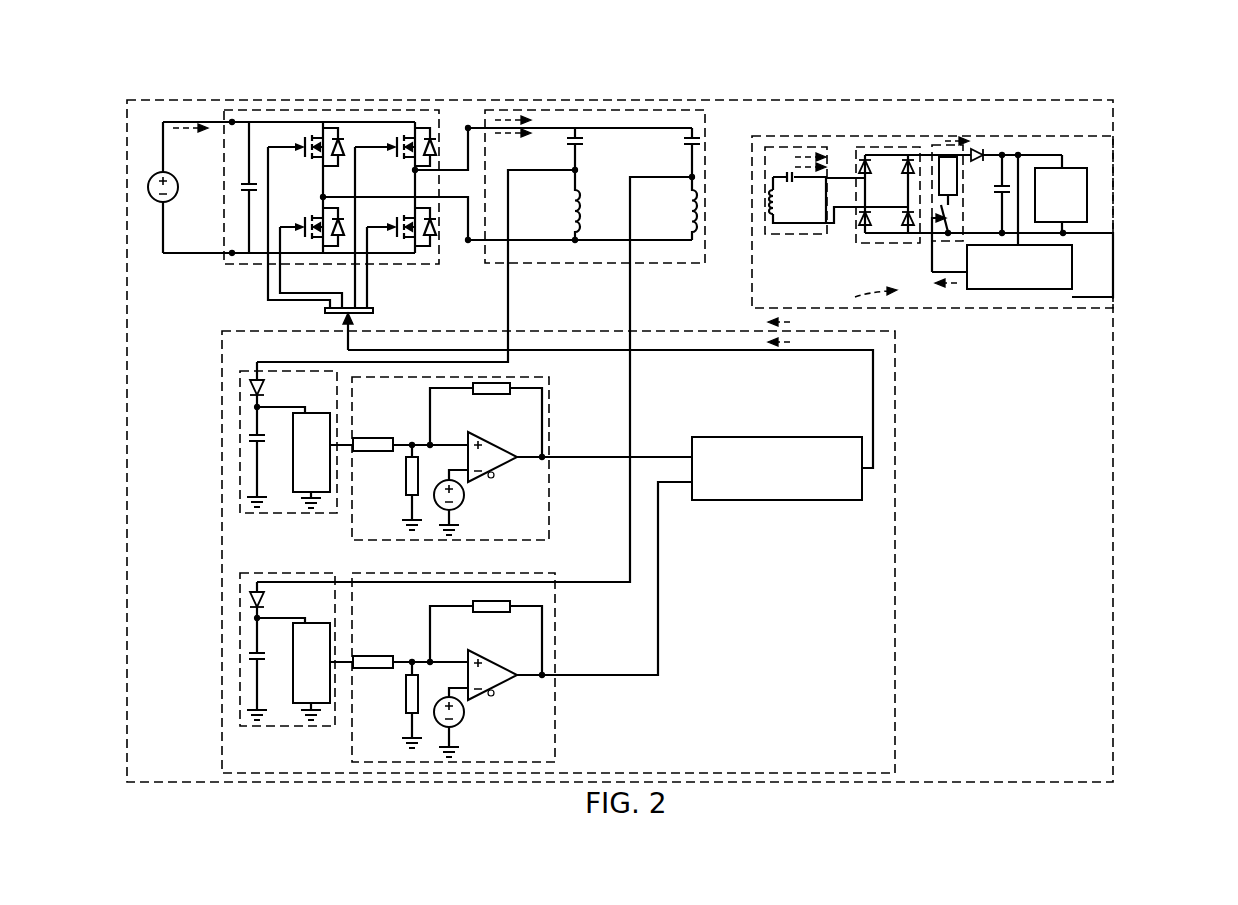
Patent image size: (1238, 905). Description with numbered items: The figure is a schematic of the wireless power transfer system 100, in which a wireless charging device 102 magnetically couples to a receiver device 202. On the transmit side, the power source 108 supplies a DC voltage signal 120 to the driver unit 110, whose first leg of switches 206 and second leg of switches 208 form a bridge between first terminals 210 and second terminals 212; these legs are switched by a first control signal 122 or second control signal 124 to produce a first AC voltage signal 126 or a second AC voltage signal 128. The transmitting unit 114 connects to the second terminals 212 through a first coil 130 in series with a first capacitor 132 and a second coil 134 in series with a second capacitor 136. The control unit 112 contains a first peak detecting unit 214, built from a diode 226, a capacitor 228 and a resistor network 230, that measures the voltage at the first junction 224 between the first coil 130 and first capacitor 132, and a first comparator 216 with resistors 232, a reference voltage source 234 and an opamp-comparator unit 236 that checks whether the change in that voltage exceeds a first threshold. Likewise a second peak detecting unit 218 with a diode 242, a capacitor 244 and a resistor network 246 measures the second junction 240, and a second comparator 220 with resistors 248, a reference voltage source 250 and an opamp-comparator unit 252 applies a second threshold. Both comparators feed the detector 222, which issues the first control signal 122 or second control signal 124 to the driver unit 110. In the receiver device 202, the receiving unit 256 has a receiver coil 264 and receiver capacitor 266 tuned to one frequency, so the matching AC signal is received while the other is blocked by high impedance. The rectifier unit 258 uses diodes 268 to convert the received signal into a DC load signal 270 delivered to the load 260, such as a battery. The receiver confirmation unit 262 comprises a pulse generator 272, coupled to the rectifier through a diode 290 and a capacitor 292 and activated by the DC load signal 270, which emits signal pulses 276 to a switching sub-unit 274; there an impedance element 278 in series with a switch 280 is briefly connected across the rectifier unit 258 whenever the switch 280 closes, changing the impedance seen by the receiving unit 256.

The wireless power transfer system 100 is at (1130, 80).
The wireless charging device 102 is at (158, 112).
The power source 108 is at (148, 187).
The driver unit 110 is at (333, 110).
The control unit 112 is at (896, 560).
The transmitting unit 114 is at (595, 110).
The DC voltage signal 120 is at (192, 125).
The first control signal 122 is at (795, 321).
The second control signal 124 is at (795, 341).
The first AC voltage signal 126 is at (508, 137).
The second AC voltage signal 128 is at (513, 118).
The first coil 130 is at (570, 222).
The first capacitor 132 is at (580, 142).
The second coil 134 is at (687, 222).
The second capacitor 136 is at (688, 142).
The receiver device 202 is at (1032, 136).
The first leg of switches 206 is at (305, 217).
The second leg of switches 208 is at (397, 217).
The first terminals 210 is at (233, 120).
The second terminals 212 is at (467, 126).
The first peak detecting unit 214 is at (286, 515).
The first comparator 216 is at (550, 418).
The second peak detecting unit 218 is at (286, 727).
The second comparator 220 is at (556, 733).
The detector 222 is at (780, 437).
The first junction 224 is at (573, 173).
The diode 226 is at (250, 388).
The capacitor 228 is at (250, 438).
The resistor network 230 is at (325, 413).
The resistors 232 is at (505, 383).
The reference voltage source 234 is at (465, 498).
The opamp-comparator unit 236 is at (492, 437).
The second junction 240 is at (688, 179).
The diode 242 is at (250, 600).
The capacitor 244 is at (250, 656).
The resistor network 246 is at (325, 623).
The resistors 248 is at (470, 606).
The reference voltage source 250 is at (465, 715).
The opamp-comparator unit 252 is at (492, 655).
The receiving unit 256 is at (795, 236).
The rectifier unit 258 is at (865, 245).
The load 260 is at (1072, 166).
The receiver confirmation unit 262 is at (858, 297).
The receiver coil 264 is at (770, 204).
The receiver capacitor 266 is at (790, 180).
The diodes 268 is at (908, 214).
The DC load signal 270 is at (948, 139).
The pulse generator 272 is at (1000, 290).
The switching sub-unit 274 is at (940, 240).
The signal pulses 276 is at (946, 290).
The impedance element 278 is at (940, 165).
The switch 280 is at (952, 216).
The diode 290 is at (978, 148).
The capacitor 292 is at (998, 188).